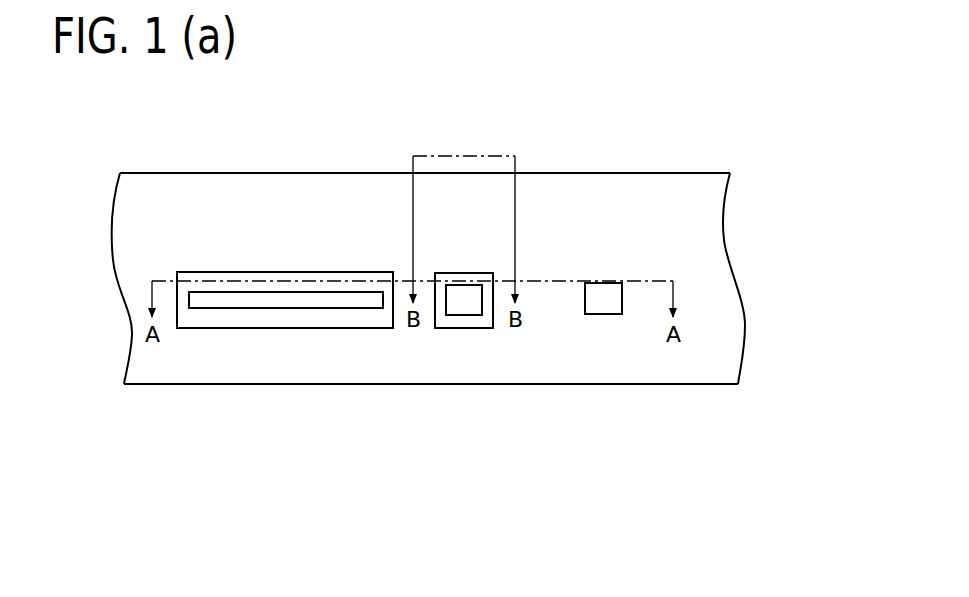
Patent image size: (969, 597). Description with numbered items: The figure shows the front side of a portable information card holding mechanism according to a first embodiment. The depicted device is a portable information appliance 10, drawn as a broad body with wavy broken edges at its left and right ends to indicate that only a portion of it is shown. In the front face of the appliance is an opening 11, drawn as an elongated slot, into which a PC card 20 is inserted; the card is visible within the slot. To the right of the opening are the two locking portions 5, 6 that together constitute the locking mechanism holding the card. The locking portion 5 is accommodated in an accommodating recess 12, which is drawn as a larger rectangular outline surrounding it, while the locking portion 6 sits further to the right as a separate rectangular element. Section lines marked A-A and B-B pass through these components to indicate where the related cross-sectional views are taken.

The portable information appliance 10 is at (586, 167).
The opening 11 is at (200, 318).
The PC card 20 is at (303, 303).
The accommodating recess 12 is at (445, 323).
The locking portion 5 is at (473, 315).
The locking portion 6 is at (607, 314).